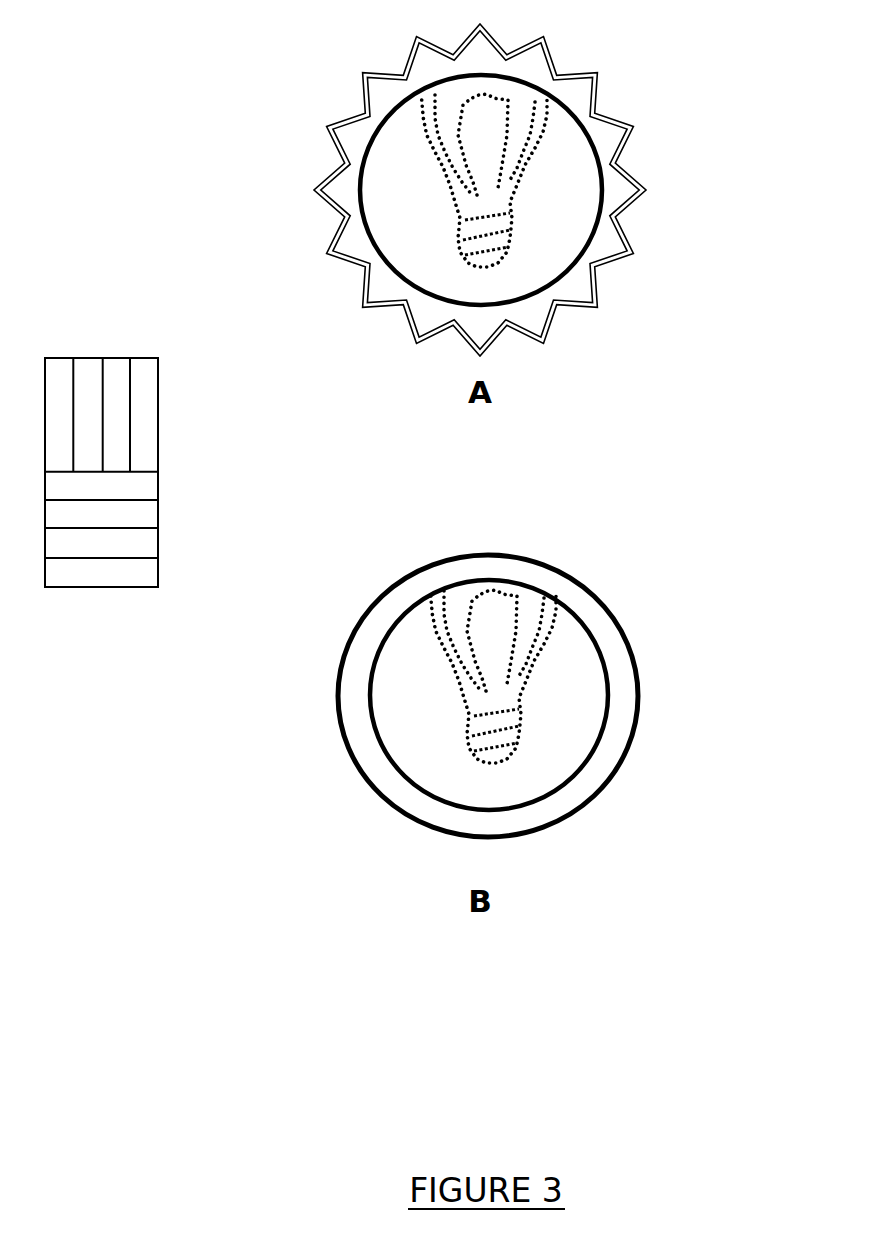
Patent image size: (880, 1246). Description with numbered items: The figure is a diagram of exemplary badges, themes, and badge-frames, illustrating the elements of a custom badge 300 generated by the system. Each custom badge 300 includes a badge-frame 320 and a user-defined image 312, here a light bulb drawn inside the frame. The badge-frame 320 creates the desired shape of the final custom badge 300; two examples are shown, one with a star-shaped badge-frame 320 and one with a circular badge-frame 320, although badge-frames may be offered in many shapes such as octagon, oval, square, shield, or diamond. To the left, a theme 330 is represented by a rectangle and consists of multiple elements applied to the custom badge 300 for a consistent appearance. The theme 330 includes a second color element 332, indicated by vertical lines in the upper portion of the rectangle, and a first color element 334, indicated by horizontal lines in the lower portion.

The custom badge 300 is at (539, 433).
The user-defined image 312 is at (510, 230).
The badge-frame 320 is at (575, 93).
The theme 330 is at (183, 472).
The second color element 332 is at (122, 422).
The first color element 334 is at (122, 527).